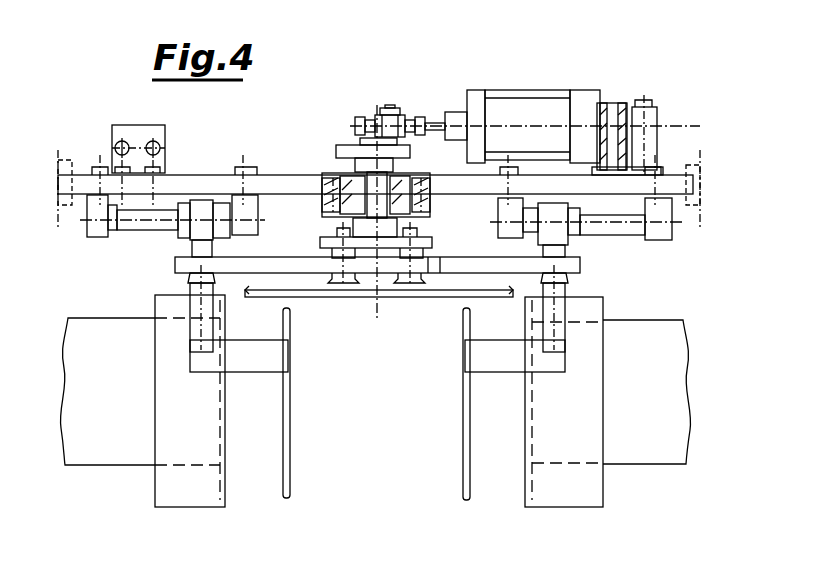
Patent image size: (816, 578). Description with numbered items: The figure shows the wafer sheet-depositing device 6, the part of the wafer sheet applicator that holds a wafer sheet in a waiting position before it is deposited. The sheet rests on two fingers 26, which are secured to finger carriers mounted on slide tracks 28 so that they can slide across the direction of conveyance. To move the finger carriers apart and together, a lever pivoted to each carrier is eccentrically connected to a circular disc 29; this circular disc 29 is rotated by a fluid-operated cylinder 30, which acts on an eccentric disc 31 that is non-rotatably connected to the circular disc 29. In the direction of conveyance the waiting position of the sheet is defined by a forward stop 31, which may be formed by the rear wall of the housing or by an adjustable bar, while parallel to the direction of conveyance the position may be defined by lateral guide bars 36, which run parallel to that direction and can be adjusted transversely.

The wafer sheet-depositing device 6 is at (421, 70).
The fingers 26 is at (290, 318).
The slide tracks 28 is at (147, 228).
The circular disc 29 is at (320, 237).
The fluid-operated cylinder 30 is at (528, 100).
The eccentric disc 31 is at (335, 145).
The lateral guide bars 36 is at (225, 490).